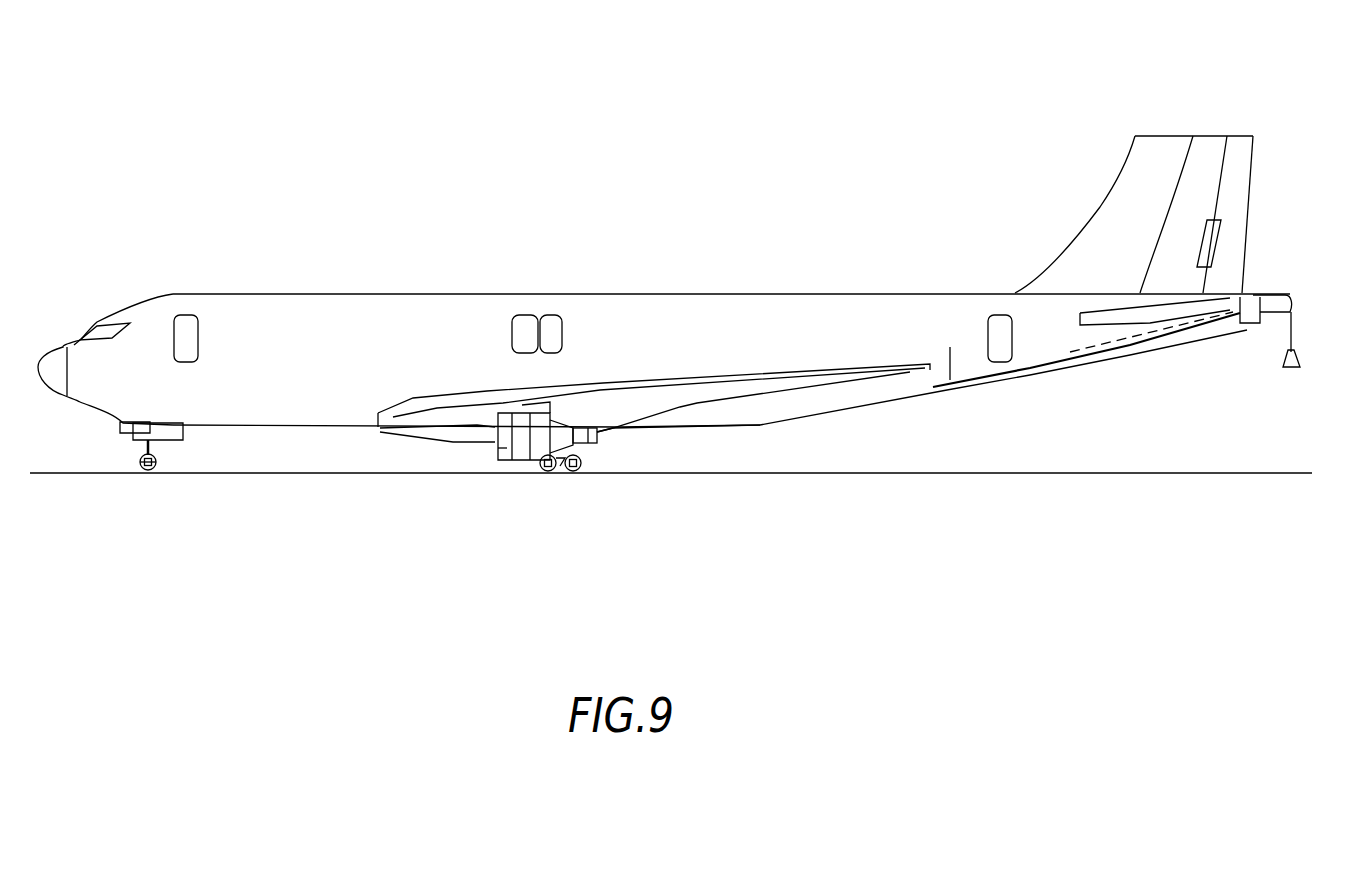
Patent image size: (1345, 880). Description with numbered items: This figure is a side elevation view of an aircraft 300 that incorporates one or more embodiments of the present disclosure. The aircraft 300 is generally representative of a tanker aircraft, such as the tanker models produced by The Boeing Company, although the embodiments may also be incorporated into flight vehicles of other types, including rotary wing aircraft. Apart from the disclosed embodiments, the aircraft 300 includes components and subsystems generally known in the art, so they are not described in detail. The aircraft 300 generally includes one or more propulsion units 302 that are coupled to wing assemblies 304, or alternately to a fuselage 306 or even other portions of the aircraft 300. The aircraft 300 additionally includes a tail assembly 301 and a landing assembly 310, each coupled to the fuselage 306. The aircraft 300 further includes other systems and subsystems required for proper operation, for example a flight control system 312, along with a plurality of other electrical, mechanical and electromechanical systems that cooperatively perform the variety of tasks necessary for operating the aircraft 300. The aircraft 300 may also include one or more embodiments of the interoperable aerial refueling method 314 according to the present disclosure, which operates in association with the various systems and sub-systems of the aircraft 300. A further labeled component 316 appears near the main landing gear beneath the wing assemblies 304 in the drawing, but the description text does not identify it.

The aircraft 300 is at (617, 140).
The tail assembly 301 is at (1273, 243).
The propulsion unit 302 is at (497, 450).
The wing assembly 304 is at (680, 397).
The fuselage 306 is at (948, 380).
The landing assembly 310 is at (157, 464).
The flight control system 312 is at (82, 357).
The interoperable aerial refueling method 314 is at (1142, 380).
The main landing gear 316 is at (581, 466).